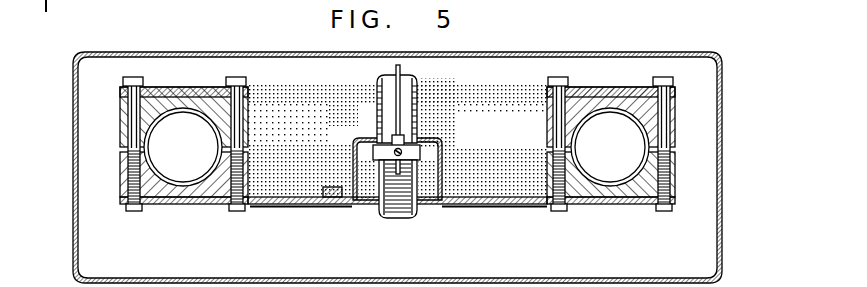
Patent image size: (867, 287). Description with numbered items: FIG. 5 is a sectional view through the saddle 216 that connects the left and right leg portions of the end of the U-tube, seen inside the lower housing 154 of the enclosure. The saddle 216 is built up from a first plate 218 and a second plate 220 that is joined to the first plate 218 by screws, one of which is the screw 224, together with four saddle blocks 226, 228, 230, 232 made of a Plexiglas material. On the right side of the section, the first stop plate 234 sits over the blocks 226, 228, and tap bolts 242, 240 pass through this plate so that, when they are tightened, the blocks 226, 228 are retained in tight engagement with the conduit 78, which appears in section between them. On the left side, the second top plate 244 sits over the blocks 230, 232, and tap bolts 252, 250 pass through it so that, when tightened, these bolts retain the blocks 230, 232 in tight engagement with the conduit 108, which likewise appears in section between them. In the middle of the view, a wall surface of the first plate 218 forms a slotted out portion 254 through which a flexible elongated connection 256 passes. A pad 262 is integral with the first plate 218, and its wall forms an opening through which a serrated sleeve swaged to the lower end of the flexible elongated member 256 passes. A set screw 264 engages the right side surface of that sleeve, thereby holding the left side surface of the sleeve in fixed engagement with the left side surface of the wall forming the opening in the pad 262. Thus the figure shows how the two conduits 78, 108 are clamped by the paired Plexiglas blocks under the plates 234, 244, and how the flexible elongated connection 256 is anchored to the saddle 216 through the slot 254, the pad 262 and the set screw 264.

The lower housing 154 is at (712, 52).
The second top plate 244 is at (187, 93).
The first stop plate 234 is at (616, 93).
The saddle block 230 is at (120, 105).
The saddle block 232 is at (120, 172).
The saddle block 226 is at (677, 112).
The saddle block 228 is at (677, 176).
The tap bolt 252 is at (134, 211).
The tap bolt 250 is at (240, 211).
The tap bolt 242 is at (561, 209).
The tap bolt 240 is at (666, 211).
The second plate 220 is at (185, 200).
The conduit 78 is at (605, 183).
The conduit 108 is at (203, 205).
The first plate 218 is at (626, 204).
The saddle 216 is at (313, 219).
The screw 224 is at (331, 187).
The flexible elongated connection 256 is at (395, 69).
The slotted out portion 254 is at (413, 144).
The pad 262 is at (372, 158).
The set screw 264 is at (400, 212).